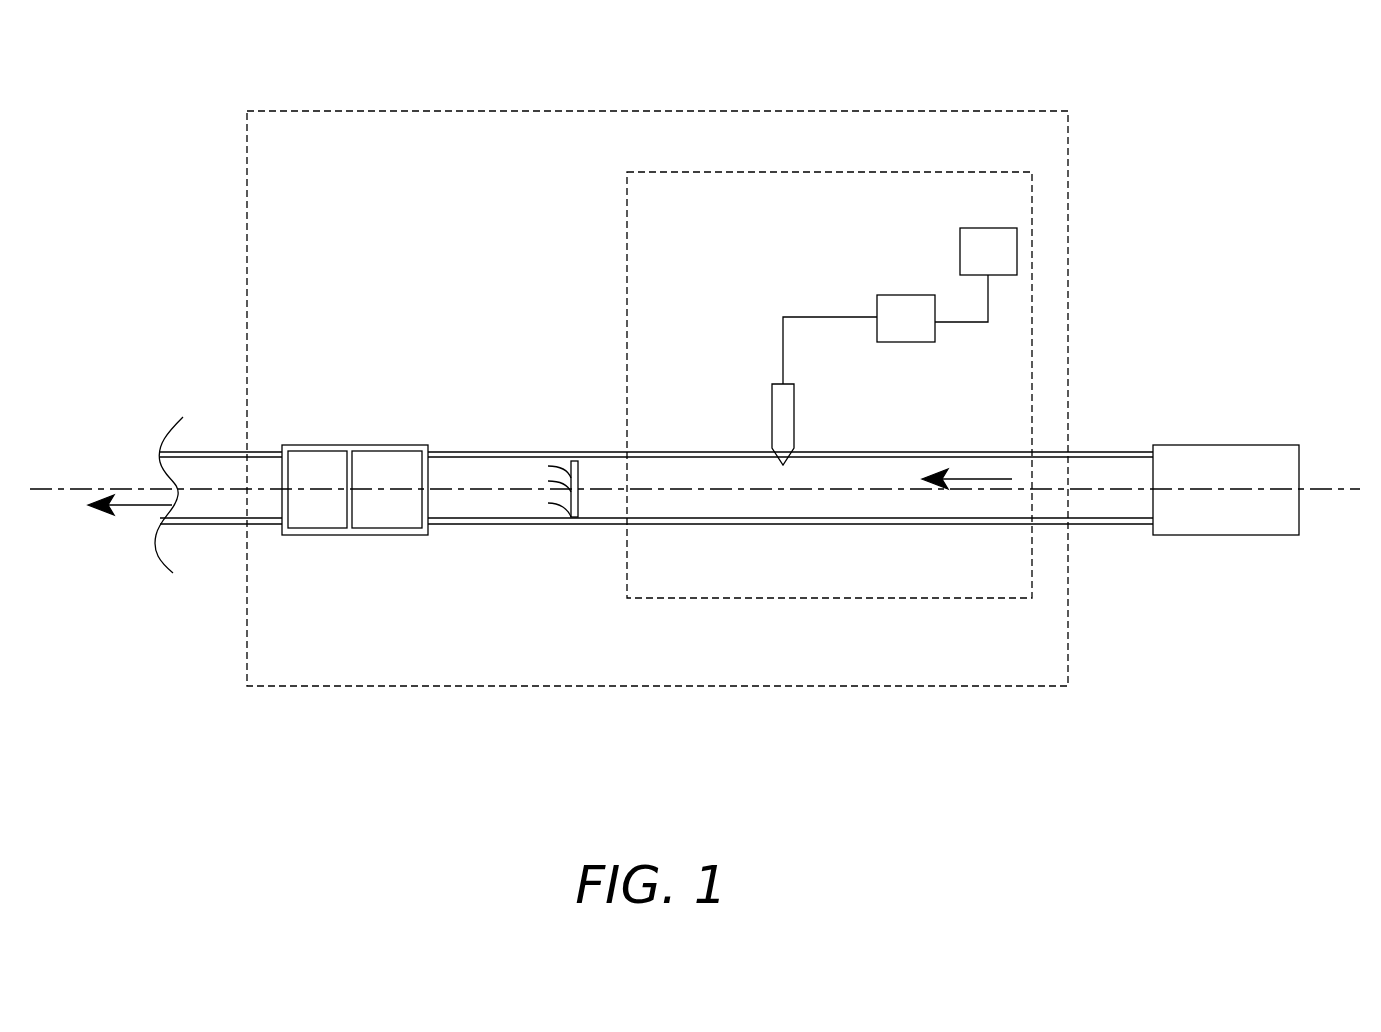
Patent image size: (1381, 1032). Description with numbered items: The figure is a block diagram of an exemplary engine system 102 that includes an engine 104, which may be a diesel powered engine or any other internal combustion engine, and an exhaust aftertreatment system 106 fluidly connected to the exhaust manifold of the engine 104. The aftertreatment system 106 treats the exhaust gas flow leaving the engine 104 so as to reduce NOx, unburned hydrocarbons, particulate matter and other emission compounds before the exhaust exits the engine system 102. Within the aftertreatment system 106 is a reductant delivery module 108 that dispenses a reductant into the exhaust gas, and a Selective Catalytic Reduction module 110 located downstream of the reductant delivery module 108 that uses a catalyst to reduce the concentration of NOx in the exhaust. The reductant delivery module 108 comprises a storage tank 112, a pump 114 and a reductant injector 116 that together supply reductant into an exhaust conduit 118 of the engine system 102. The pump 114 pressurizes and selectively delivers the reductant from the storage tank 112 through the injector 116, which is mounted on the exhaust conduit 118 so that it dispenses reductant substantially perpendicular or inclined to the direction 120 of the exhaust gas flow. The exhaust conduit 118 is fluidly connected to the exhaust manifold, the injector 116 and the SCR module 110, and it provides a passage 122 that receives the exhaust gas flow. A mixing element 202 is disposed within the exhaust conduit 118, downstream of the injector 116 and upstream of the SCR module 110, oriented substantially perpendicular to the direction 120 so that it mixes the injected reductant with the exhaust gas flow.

The engine system 102 is at (1142, 80).
The engine 104 is at (1226, 490).
The exhaust aftertreatment system 106 is at (1068, 233).
The reductant delivery module 108 is at (627, 232).
The Selective Catalytic Reduction (SCR) module 110 is at (355, 490).
The storage tank 112 is at (976, 275).
The pump 114 is at (859, 339).
The reductant injector 116 is at (770, 400).
The exhaust conduit 118 is at (467, 452).
The direction of the exhaust gas flow 120 is at (980, 479).
The passage 122 is at (515, 480).
The mixing element 202 is at (568, 520).